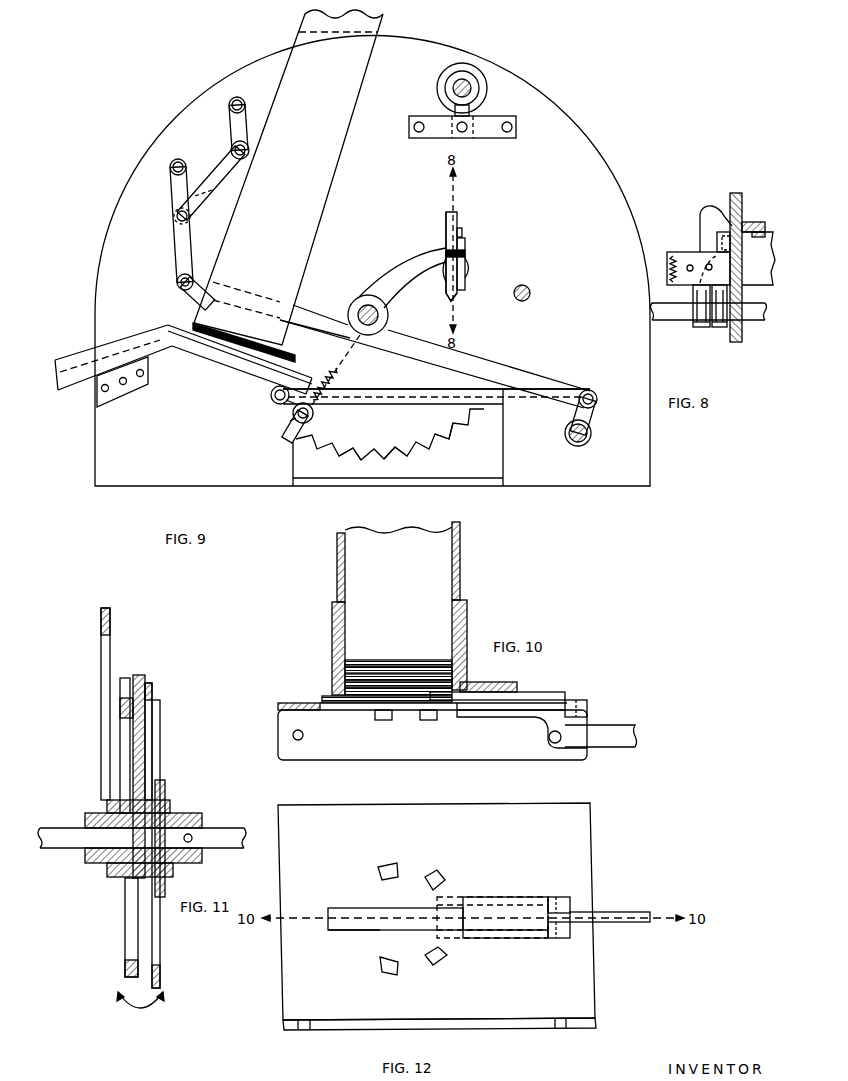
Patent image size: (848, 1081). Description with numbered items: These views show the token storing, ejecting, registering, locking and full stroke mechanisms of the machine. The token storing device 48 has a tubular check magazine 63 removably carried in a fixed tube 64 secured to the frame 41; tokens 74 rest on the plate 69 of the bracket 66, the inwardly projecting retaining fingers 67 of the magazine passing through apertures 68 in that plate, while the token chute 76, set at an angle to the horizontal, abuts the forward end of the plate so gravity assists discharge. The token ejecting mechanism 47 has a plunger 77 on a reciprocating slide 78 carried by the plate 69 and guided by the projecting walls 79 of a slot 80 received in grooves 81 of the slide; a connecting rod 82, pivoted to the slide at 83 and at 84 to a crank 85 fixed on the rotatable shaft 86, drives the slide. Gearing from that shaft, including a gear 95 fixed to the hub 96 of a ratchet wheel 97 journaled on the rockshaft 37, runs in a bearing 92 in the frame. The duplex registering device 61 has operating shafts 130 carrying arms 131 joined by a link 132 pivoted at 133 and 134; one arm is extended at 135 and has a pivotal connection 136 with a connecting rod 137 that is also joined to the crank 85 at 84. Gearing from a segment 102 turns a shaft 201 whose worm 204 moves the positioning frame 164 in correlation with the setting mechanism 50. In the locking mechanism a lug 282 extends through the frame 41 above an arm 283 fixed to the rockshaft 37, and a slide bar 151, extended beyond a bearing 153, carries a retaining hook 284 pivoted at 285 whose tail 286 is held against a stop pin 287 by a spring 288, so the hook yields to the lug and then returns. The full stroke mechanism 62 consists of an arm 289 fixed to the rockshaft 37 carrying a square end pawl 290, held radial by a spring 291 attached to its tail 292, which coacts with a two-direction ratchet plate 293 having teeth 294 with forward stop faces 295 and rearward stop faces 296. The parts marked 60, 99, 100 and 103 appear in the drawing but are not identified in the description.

In FIG. 9, the frame 41 is at (584, 129).
In FIG. 9, the token storing device 48 is at (340, 152).
In FIG. 10, the token storing device 48 is at (345, 642).
In FIG. 9, the shaft 201 is at (480, 110).
In FIG. 9, the worm 204 is at (480, 90).
In FIG. 9, the positioning frame 164 is at (474, 139).
In FIG. 9, the operating shafts 130 is at (228, 106).
In FIG. 9, the duplex registering device 61 is at (225, 125).
In FIG. 9, the arms 131 is at (212, 178).
In FIG. 9, the link 132 is at (211, 198).
In FIG. 9, the pivot 133 is at (174, 217).
In FIG. 9, the pivot 134 is at (249, 150).
In FIG. 9, the arm extension 135 is at (173, 262).
In FIG. 9, the pivoted connection 136 is at (177, 283).
In FIG. 9, the token chute 76 is at (140, 330).
In FIG. 9, the plate 69 is at (205, 350).
In FIG. 10, the plate 69 is at (278, 705).
In FIG. 12, the plate 69 is at (400, 805).
In FIG. 9, the reciprocating slide 78 is at (228, 357).
In FIG. 10, the reciprocating slide 78 is at (567, 712).
In FIG. 12, the reciprocating slide 78 is at (555, 897).
In FIG. 9, the arm 289 is at (330, 340).
In FIG. 8, the arm 289 is at (694, 328).
In FIG. 9, the rockshaft 37 is at (353, 302).
In FIG. 8, the rockshaft 37 is at (682, 322).
In FIG. 11, the rockshaft 37 is at (213, 828).
In FIG. 9, the arm 283 is at (405, 258).
In FIG. 8, the arm 283 is at (722, 328).
In FIG. 9, the connecting rod 137 is at (480, 356).
In FIG. 9, the spring 291 is at (355, 374).
In FIG. 9, the latch 60 is at (470, 251).
In FIG. 8, the latch 60 is at (713, 200).
In FIG. 9, the retaining hook 284 is at (458, 216).
In FIG. 8, the retaining hook 284 is at (700, 220).
In FIG. 9, the lug 282 is at (462, 232).
In FIG. 8, the lug 282 is at (745, 222).
In FIG. 9, the slide bar 151 is at (466, 281).
In FIG. 8, the slide bar 151 is at (754, 240).
In FIG. 9, the bearing 153 is at (468, 275).
In FIG. 9, the pivot 285 is at (443, 272).
In FIG. 9, the tail 286 is at (458, 294).
In FIG. 8, the tail 286 is at (680, 286).
In FIG. 9, the bearing 92 is at (531, 291).
In FIG. 9, the token ejecting mechanism 47 is at (436, 387).
In FIG. 10, the token ejecting mechanism 47 is at (522, 725).
In FIG. 12, the token ejecting mechanism 47 is at (505, 906).
In FIG. 9, the connecting rod 82 is at (377, 388).
In FIG. 10, the connecting rod 82 is at (592, 725).
In FIG. 12, the connecting rod 82 is at (597, 912).
In FIG. 9, the pivot 83 is at (271, 396).
In FIG. 10, the pivot 83 is at (562, 738).
In FIG. 12, the pivot 83 is at (572, 929).
In FIG. 9, the pivotal connection 84 is at (596, 398).
In FIG. 9, the crank 85 is at (594, 410).
In FIG. 9, the rotatable shaft 86 is at (591, 434).
In FIG. 9, the square end pawl 290 is at (283, 430).
In FIG. 9, the full stroke mechanism 62 is at (313, 432).
In FIG. 9, the tail 292 is at (325, 404).
In FIG. 9, the two-direction ratchet plate 293 is at (292, 461).
In FIG. 9, the teeth 294 is at (350, 447).
In FIG. 9, the forward stop faces 295 is at (400, 454).
In FIG. 9, the rearward stop faces 296 is at (455, 427).
In FIG. 8, the stop pin 287 is at (706, 263).
In FIG. 8, the spring 288 is at (666, 270).
In FIG. 10, the tubular check magazine 63 is at (458, 522).
In FIG. 10, the fixed tube 64 is at (467, 600).
In FIG. 10, the tokens 74 is at (327, 693).
In FIG. 10, the bracket 66 is at (278, 751).
In FIG. 12, the bracket 66 is at (284, 1027).
In FIG. 10, the plunger 77 is at (530, 692).
In FIG. 12, the plunger 77 is at (450, 897).
In FIG. 10, the retaining fingers 67 is at (384, 721).
In FIG. 10, the grooves 81 is at (453, 708).
In FIG. 12, the grooves 81 is at (520, 931).
In FIG. 11, the gear 95 is at (120, 688).
In FIG. 11, the hub 96 is at (121, 877).
In FIG. 11, the segment 102 is at (138, 674).
In FIG. 11, the bar 99 is at (153, 700).
In FIG. 11, the ratchet wheel 97 is at (157, 728).
In FIG. 11, the bar 100 is at (165, 793).
In FIG. 11, the bar 103 is at (140, 883).
In FIG. 11, the setting mechanism 50 is at (140, 1004).
In FIG. 12, the slot 80 is at (368, 912).
In FIG. 12, the projecting walls 79 is at (368, 931).
In FIG. 12, the apertures 68 is at (427, 875).